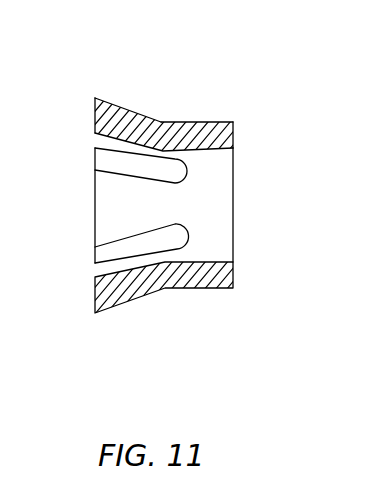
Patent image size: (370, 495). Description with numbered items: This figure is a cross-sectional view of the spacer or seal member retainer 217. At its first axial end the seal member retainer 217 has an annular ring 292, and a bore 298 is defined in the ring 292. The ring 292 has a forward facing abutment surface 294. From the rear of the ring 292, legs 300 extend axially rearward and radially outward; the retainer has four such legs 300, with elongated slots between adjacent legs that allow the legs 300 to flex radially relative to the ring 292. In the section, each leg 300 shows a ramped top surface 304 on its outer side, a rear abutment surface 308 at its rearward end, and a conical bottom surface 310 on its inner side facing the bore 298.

The seal member retainer 217 is at (206, 81).
The annular ring 292 is at (213, 123).
The forward facing abutment surface 294 is at (233, 135).
The bore 298 is at (217, 205).
The leg 300 is at (128, 290).
The ramped top surface 304 is at (139, 125).
The rear abutment surface 308 is at (93, 108).
The conical bottom surface 310 is at (133, 138).